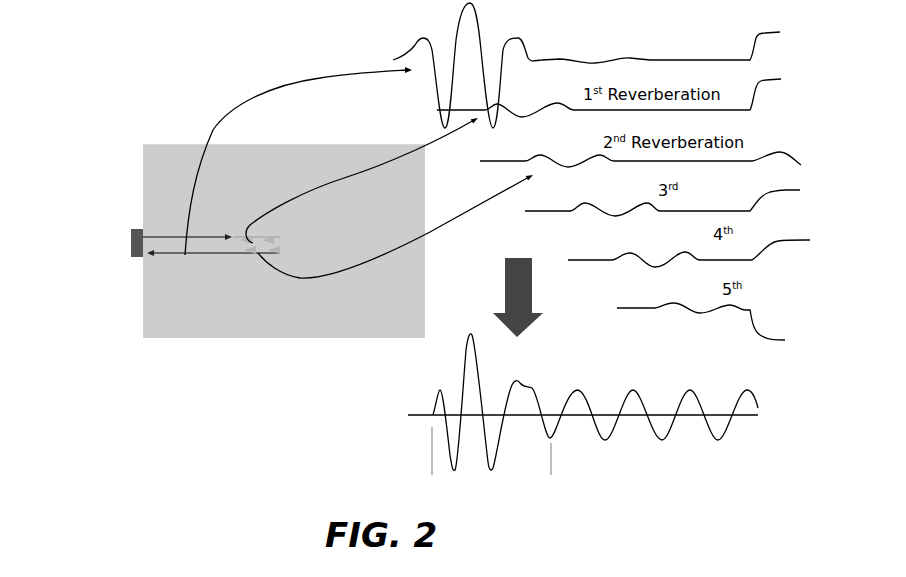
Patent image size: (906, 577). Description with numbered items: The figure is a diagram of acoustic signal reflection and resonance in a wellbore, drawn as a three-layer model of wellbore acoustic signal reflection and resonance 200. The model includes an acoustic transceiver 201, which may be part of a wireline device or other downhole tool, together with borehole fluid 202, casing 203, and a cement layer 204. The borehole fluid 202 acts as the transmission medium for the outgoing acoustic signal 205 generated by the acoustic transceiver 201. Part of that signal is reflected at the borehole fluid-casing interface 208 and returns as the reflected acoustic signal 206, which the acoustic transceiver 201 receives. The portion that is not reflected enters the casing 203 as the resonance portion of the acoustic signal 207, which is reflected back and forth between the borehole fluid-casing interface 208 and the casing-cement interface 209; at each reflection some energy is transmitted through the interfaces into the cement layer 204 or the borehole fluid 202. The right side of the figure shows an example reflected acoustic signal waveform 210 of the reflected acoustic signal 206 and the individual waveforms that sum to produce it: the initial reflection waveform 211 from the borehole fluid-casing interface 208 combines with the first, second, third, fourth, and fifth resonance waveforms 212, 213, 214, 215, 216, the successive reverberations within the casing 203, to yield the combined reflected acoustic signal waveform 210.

The three-layer model of wellbore acoustic signal reflection and resonance 200 is at (133, 95).
The acoustic transceiver 201 is at (142, 256).
The borehole fluid 202 is at (180, 337).
The casing 203 is at (258, 338).
The cement layer 204 is at (319, 338).
The outgoing acoustic signal 205 is at (165, 236).
The reflected acoustic signal 206 is at (165, 254).
The resonance portion of the acoustic signal 207 is at (277, 242).
The borehole fluid-casing interface 208 is at (237, 146).
The casing-cement interface 209 is at (283, 146).
The reflected acoustic signal waveform 210 is at (765, 407).
The initial reflection waveform 211 is at (605, 65).
The first resonance waveform 212 is at (627, 93).
The second resonance waveform 213 is at (657, 163).
The third resonance waveform 214 is at (680, 200).
The fourth resonance waveform 215 is at (707, 252).
The fifth resonance waveform 216 is at (719, 326).